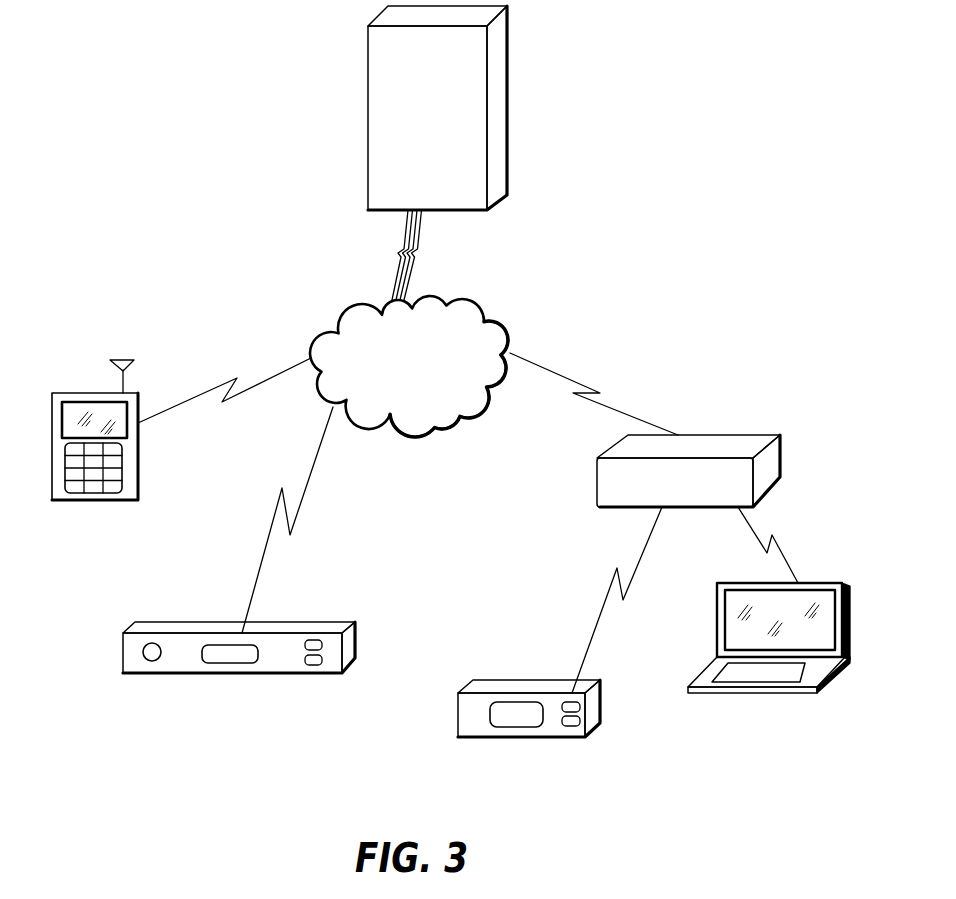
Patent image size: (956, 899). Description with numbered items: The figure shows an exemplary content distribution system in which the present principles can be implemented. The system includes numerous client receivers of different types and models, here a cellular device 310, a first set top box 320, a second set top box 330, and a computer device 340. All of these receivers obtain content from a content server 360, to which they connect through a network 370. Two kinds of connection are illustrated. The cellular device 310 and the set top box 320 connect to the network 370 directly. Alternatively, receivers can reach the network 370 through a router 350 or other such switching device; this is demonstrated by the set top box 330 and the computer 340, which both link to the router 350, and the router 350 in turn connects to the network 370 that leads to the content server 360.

The cellular device 310 is at (68, 393).
The set top box 320 is at (310, 622).
The set top box 330 is at (518, 680).
The computer device 340 is at (752, 583).
The router 350 is at (728, 435).
The content server 360 is at (507, 73).
The network 370 is at (488, 307).